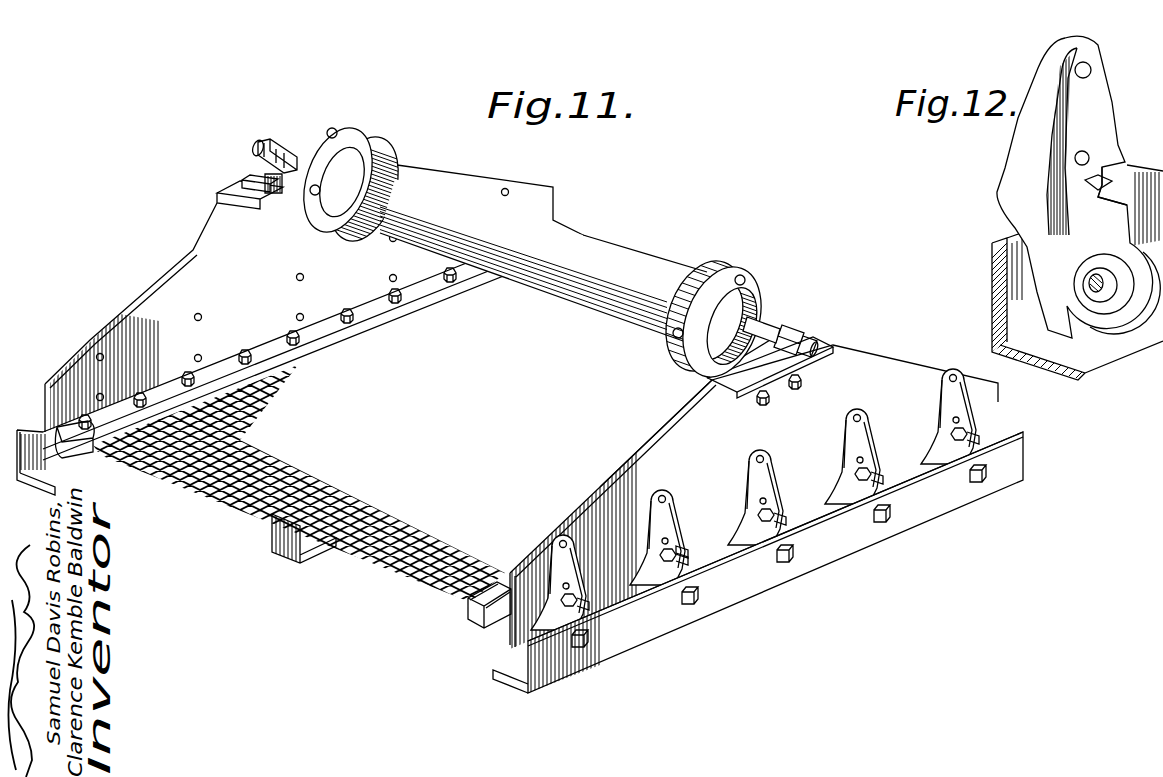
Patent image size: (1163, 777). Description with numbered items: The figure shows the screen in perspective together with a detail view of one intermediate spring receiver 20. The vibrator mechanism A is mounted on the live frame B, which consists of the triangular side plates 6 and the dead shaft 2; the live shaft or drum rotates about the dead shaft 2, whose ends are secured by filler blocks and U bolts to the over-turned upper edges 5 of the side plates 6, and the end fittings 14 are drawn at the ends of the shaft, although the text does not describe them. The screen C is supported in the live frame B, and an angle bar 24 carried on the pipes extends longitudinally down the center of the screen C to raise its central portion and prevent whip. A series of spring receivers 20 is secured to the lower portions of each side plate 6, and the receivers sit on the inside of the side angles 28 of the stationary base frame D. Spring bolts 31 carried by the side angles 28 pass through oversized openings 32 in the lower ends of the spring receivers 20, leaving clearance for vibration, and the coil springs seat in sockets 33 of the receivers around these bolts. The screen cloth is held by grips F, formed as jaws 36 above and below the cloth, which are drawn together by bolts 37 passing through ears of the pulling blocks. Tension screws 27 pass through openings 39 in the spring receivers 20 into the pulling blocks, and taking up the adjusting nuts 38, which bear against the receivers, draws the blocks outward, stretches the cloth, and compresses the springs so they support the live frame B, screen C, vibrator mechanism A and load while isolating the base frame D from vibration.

In FIG. 11, the dead shaft 2 is at (795, 332).
In FIG. 11, the over-turned upper edges 5 is at (730, 394).
In FIG. 11, the side plates 6 is at (672, 430).
In FIG. 11, the coupling 14 is at (284, 126).
In FIG. 11, the spring receivers 20 is at (555, 541).
In FIG. 12, the spring receivers 20 is at (1050, 221).
In FIG. 11, the angle bar 24 is at (275, 551).
In FIG. 11, the tension screws 27 is at (710, 573).
In FIG. 12, the side angles 28 is at (990, 326).
In FIG. 11, the spring bolts 31 is at (582, 646).
In FIG. 12, the spring bolts 31 is at (1080, 282).
In FIG. 12, the openings 32 is at (1094, 310).
In FIG. 12, the sockets 33 is at (1128, 308).
In FIG. 11, the jaws 36 is at (128, 462).
In FIG. 11, the bolts 37 is at (188, 372).
In FIG. 11, the adjusting nuts 38 is at (688, 530).
In FIG. 12, the openings 39 is at (1098, 185).
In FIG. 11, the vibrator mechanism A is at (627, 258).
In FIG. 11, the live frame B is at (593, 493).
In FIG. 11, the screen C is at (387, 522).
In FIG. 11, the base frame D is at (657, 627).
In FIG. 11, the grips F is at (467, 608).